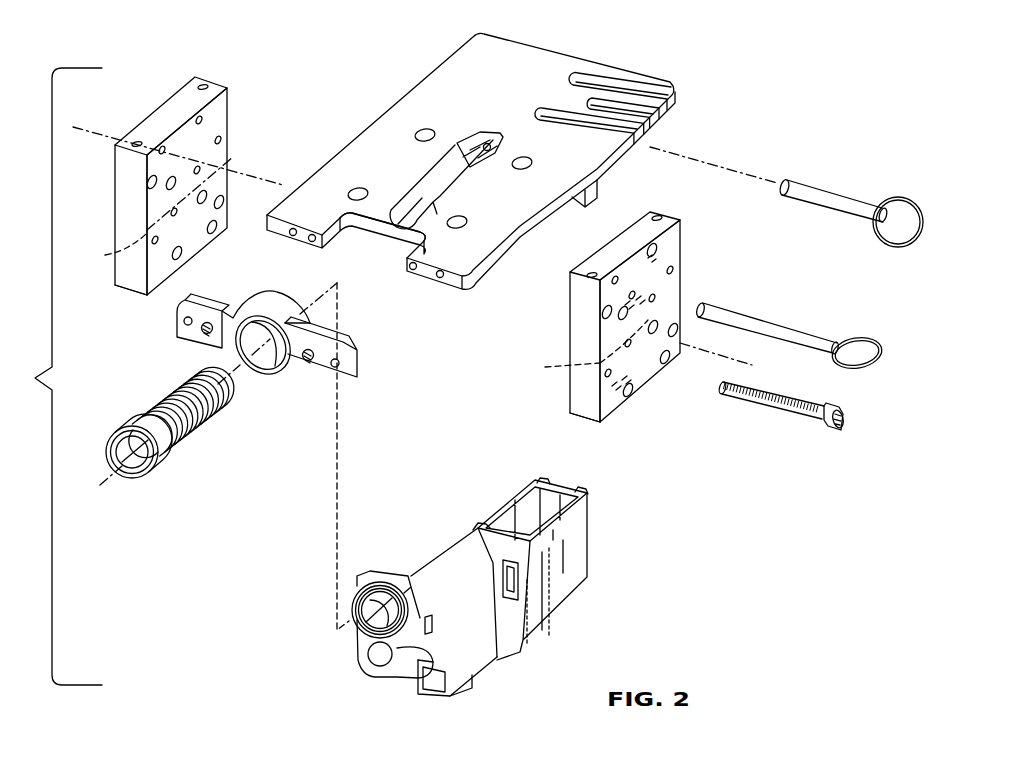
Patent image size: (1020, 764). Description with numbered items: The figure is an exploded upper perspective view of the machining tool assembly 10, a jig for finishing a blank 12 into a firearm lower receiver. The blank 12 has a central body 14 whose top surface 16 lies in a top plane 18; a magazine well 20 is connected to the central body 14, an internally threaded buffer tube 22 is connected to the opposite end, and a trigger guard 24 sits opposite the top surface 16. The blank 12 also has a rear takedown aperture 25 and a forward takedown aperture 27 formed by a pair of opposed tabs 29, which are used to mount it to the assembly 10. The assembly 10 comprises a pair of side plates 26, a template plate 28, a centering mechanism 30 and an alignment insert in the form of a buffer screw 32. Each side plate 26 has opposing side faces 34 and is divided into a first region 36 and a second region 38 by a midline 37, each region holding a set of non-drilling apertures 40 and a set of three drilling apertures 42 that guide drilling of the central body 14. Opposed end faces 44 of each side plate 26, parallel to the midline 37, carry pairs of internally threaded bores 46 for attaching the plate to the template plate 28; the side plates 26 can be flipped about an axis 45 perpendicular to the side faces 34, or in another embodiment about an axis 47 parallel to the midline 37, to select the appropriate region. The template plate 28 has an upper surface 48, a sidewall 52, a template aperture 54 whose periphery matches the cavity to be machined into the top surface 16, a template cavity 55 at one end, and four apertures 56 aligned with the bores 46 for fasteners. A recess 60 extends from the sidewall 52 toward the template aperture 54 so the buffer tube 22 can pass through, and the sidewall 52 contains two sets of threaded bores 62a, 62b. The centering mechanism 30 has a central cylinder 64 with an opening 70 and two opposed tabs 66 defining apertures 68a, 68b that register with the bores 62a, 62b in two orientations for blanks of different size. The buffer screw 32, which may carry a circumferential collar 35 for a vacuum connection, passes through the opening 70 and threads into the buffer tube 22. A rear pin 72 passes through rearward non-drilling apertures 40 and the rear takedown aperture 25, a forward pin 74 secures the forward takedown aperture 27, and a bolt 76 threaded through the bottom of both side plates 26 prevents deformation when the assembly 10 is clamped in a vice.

The machining tool assembly 10 is at (52, 376).
The blank 12 is at (505, 590).
The central body 14 is at (474, 612).
The top surface 16 is at (433, 583).
The top plane 18 is at (457, 604).
The magazine well 20 is at (510, 519).
The buffer tube 22 is at (362, 583).
The trigger guard 24 is at (475, 690).
The rear takedown aperture 25 is at (418, 690).
The side plate 26 is at (428, 243).
The forward takedown aperture 27 is at (587, 497).
The template plate 28 is at (458, 177).
The opposed tabs 29 is at (578, 490).
The centering mechanism 30 is at (257, 379).
The buffer screw 32 is at (170, 462).
The side faces 34 is at (182, 140).
The circumferential collar 35 is at (168, 460).
The first region 36 is at (152, 288).
The midline 37 is at (336, 269).
The second region 38 is at (153, 200).
The non-drilling apertures 40 is at (653, 255).
The drilling apertures 42 is at (640, 303).
The end faces 44 is at (148, 130).
The axis 45 is at (730, 360).
The internally threaded bores 46 is at (204, 84).
The axis 47 is at (581, 351).
The upper surface 48 is at (497, 72).
The sidewall 52 is at (480, 282).
The template aperture 54 is at (453, 177).
The template cavity 55 is at (473, 135).
The apertures 56 is at (403, 155).
The recess 60 is at (383, 252).
The threaded bores 62a is at (291, 236).
The threaded bores 62b is at (312, 242).
The central cylinder 64 is at (268, 375).
The tabs 66 is at (180, 331).
The apertures 68a is at (182, 323).
The apertures 68b is at (203, 332).
The opening 70 is at (267, 357).
The rear pin 72 is at (800, 327).
The forward pin 74 is at (828, 190).
The bolt 76 is at (790, 417).